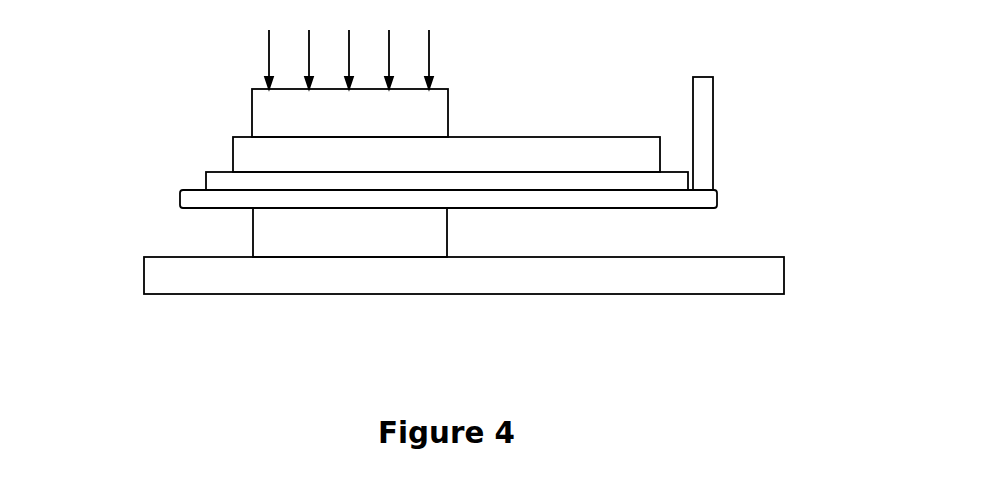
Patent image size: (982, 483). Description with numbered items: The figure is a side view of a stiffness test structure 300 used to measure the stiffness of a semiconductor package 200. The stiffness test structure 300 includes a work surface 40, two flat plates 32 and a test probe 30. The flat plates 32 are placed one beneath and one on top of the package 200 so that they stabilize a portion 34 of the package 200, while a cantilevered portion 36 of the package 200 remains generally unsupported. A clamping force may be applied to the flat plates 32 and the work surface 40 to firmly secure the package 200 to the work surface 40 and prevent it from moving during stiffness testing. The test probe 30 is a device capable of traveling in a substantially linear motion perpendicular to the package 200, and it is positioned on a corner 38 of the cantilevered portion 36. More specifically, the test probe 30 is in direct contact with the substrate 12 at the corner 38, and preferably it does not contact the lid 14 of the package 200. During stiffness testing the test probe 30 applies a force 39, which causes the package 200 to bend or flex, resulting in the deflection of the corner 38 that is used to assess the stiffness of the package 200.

The stiffness test structure 300 is at (106, 41).
The flat plates 32 is at (358, 122).
The package 200 is at (127, 138).
The lid 14 is at (647, 146).
The substrate 12 is at (210, 198).
The test probe 30 is at (705, 93).
The force 39 is at (705, 77).
The corner 38 is at (722, 190).
The work surface 40 is at (520, 287).
The portion 34 is at (447, 333).
The cantilevered portion 36 is at (714, 333).